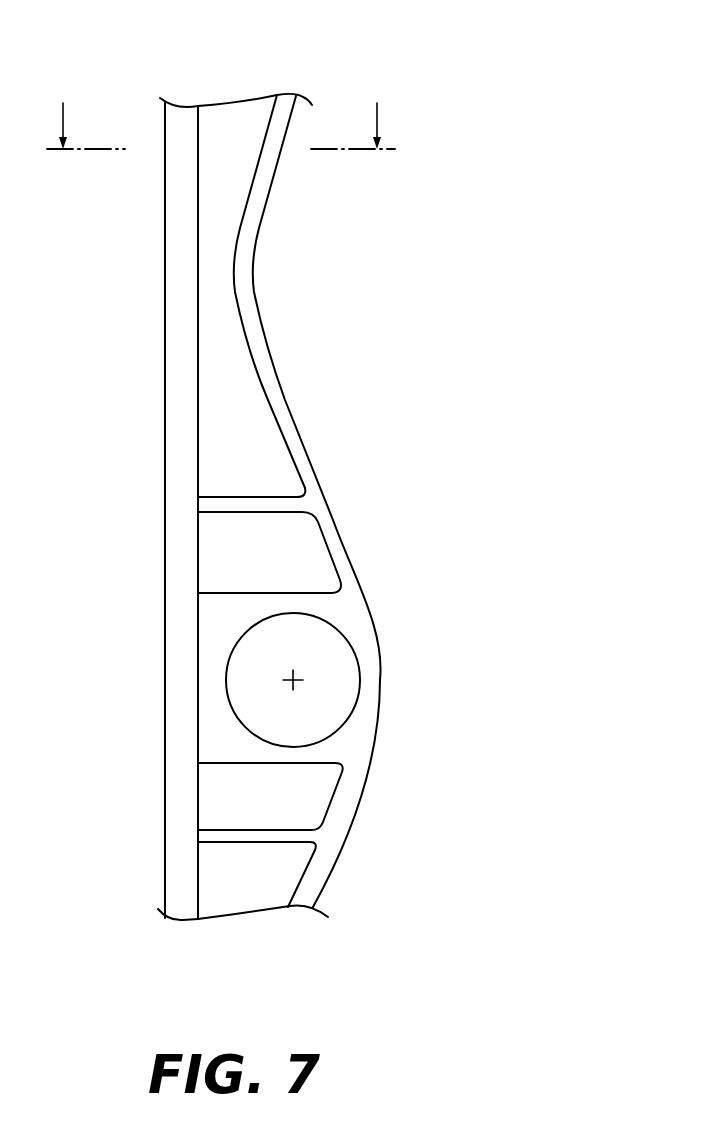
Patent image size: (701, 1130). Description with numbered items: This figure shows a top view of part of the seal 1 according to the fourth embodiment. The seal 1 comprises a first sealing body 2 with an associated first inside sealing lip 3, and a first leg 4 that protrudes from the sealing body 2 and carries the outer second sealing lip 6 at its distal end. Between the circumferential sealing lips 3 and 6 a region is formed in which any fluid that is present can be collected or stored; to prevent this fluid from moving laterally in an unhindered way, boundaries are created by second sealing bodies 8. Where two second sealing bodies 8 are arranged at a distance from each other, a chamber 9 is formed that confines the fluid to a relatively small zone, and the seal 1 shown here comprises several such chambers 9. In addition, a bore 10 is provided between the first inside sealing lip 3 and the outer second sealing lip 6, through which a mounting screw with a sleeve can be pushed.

The seal 1 is at (506, 332).
The first sealing body 2 is at (165, 375).
The first sealing lip 3 is at (177, 412).
The first leg 4 is at (228, 117).
The second sealing lip 6 is at (293, 432).
The second sealing body 8 is at (257, 502).
The chamber 9 is at (267, 558).
The bore 10 is at (338, 678).